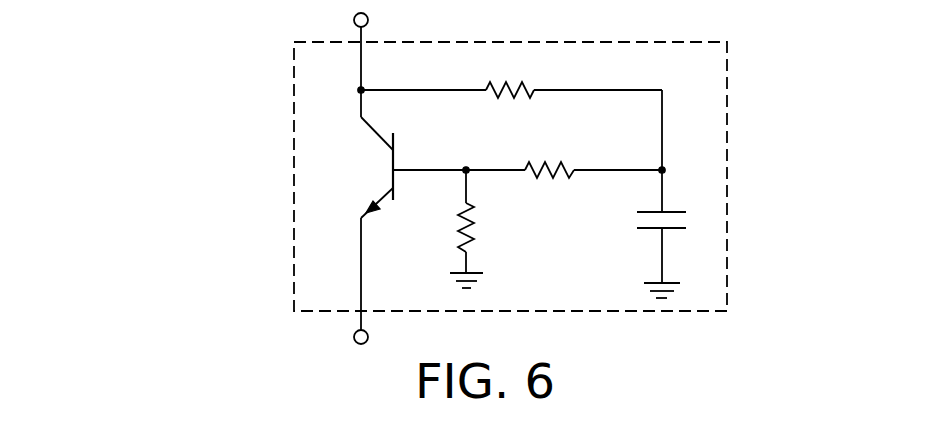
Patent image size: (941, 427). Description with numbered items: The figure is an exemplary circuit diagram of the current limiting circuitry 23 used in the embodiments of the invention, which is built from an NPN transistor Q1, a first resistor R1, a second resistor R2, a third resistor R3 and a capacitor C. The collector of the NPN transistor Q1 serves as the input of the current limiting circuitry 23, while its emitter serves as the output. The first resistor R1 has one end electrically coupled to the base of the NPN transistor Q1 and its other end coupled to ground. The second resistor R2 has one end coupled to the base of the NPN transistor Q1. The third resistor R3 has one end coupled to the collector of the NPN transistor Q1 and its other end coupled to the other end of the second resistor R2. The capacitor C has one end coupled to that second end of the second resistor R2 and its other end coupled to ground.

The current limiting circuitry 23 is at (590, 176).
The NPN transistor Q1 is at (367, 167).
The first resistor R1 is at (449, 245).
The second resistor R2 is at (549, 151).
The third resistor R3 is at (510, 71).
The capacitor C is at (644, 250).